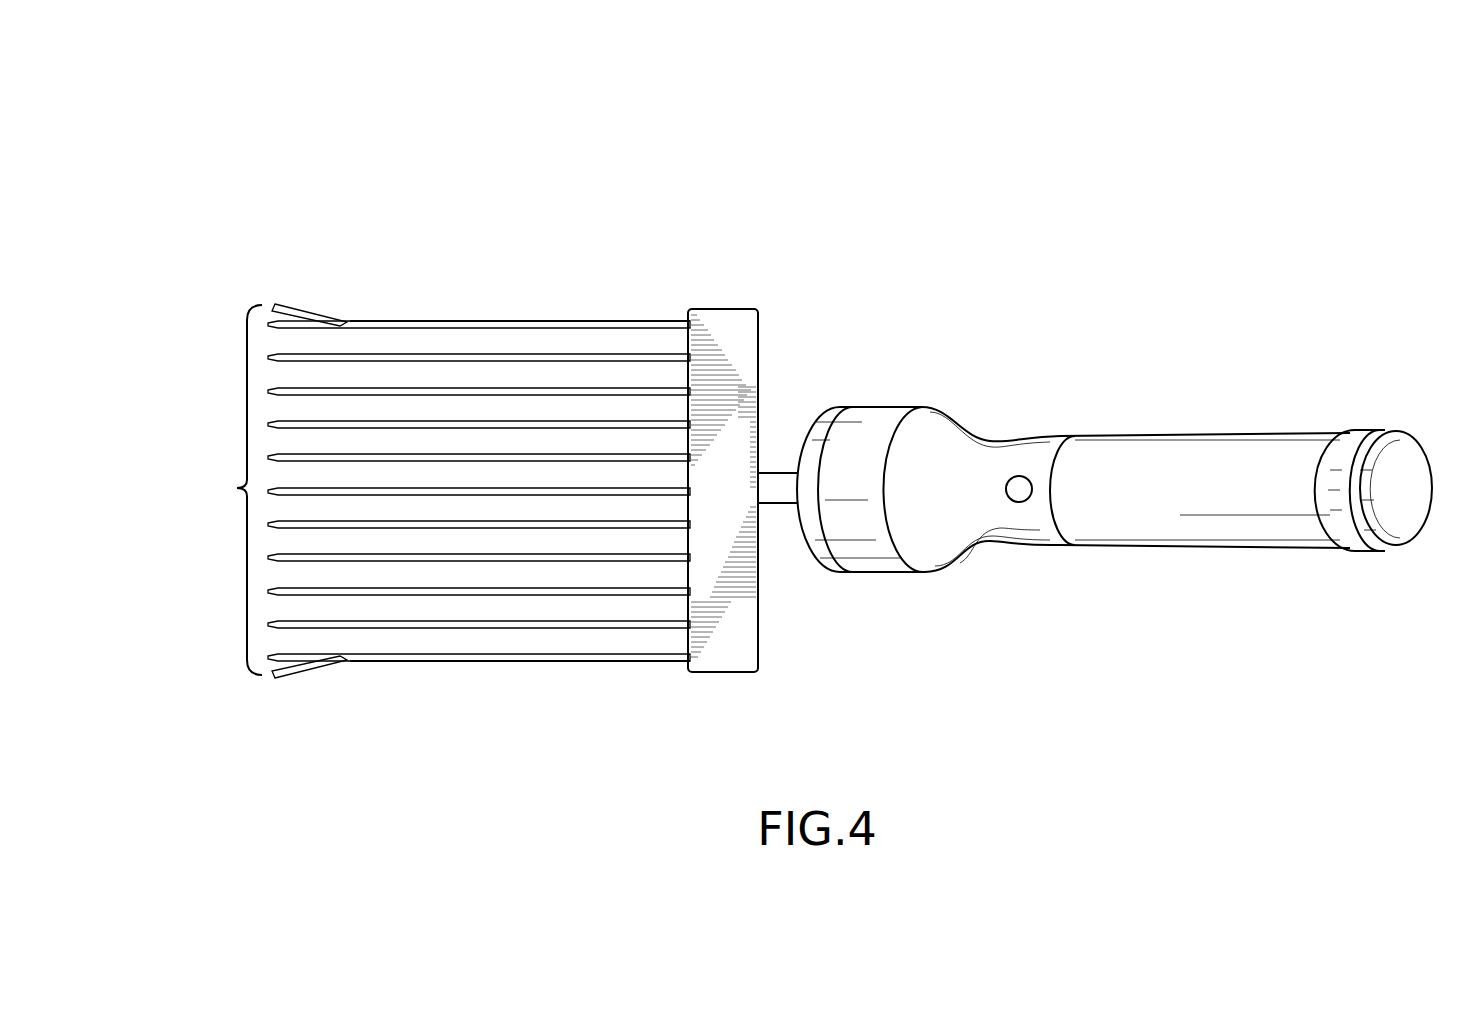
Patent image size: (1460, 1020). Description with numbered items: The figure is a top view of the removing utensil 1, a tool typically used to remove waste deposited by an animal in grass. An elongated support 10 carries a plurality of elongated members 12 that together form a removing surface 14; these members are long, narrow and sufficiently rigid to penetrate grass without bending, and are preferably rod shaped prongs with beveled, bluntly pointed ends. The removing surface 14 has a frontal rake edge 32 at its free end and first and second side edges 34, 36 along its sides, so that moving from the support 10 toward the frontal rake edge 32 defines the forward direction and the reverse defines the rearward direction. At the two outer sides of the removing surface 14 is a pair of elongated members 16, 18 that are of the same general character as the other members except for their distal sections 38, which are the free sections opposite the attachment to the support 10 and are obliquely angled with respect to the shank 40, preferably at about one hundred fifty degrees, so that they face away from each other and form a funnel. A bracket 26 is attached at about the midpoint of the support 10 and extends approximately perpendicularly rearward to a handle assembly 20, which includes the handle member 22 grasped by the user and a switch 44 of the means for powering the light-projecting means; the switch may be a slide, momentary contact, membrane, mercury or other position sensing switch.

The utensil 1 is at (267, 158).
The support 10 is at (726, 318).
The elongated members 12 is at (537, 383).
The removing surface 14 is at (478, 645).
The elongated member having an obliquely facing distal section 16 is at (333, 305).
The elongated member having an obliquely facing distal section 18 is at (332, 670).
The handle assembly 20 is at (1138, 603).
The handle member 22 is at (1190, 452).
The bracket 26 is at (776, 505).
The frontal rake edge 32 is at (230, 490).
The first side edge 34 is at (610, 318).
The second side edge 36 is at (630, 678).
The distal section 38 is at (265, 298).
The shank 40 is at (392, 318).
The switch 44 is at (1018, 488).